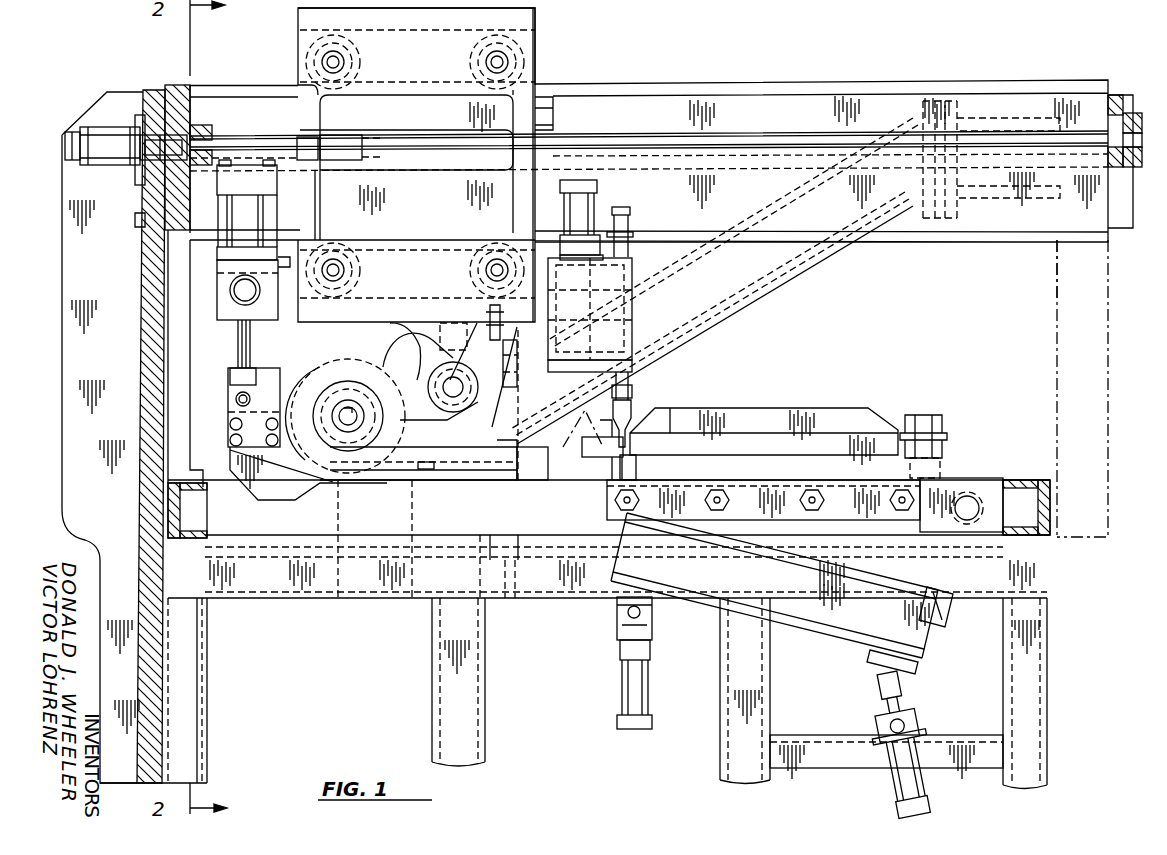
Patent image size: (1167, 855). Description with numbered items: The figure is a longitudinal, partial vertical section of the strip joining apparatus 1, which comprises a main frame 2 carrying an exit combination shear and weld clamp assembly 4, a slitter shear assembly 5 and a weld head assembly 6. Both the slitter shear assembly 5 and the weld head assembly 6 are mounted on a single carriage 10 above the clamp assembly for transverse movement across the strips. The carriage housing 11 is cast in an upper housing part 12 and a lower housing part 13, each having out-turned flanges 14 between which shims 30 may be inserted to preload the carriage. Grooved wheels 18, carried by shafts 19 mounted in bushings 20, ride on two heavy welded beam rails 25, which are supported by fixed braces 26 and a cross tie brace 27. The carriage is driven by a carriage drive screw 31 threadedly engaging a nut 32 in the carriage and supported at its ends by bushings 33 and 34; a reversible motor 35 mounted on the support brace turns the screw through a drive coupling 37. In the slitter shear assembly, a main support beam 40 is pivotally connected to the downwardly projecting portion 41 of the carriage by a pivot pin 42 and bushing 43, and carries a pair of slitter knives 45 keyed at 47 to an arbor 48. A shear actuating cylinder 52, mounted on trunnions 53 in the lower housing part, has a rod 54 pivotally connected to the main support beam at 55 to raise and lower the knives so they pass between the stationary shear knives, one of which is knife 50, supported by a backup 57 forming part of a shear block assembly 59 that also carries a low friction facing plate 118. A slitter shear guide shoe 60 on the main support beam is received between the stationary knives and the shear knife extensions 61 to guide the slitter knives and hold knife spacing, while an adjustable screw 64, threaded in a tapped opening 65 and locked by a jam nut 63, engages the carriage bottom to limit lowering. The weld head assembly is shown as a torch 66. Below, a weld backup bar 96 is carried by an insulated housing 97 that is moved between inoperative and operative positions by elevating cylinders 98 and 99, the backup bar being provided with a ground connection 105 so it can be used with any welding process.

The strip joining apparatus 1 is at (1116, 364).
The main frame 2 is at (1045, 630).
The combination shear and weld clamp assembly 4 is at (800, 400).
The slitter shear assembly 5 is at (386, 489).
The weld head assembly 6 is at (645, 388).
The carriage 10 is at (421, 162).
The carriage housing 11 is at (305, 80).
The upper housing part 12 is at (298, 15).
The lower housing part 13 is at (318, 205).
The out-turned flanges 14 is at (553, 100).
The grooved wheels 18 is at (350, 45).
The shafts 19 is at (505, 60).
The bushings 20 is at (480, 52).
The beam rails 25 is at (690, 84).
The fixed braces 26 is at (72, 421).
The cross tie brace 27 is at (728, 320).
The shims 30 is at (502, 112).
The carriage drive screw 31 is at (708, 134).
The nut 32 is at (340, 136).
The bushing 33 is at (1140, 95).
The bushing 34 is at (212, 138).
The reversible motor 35 is at (100, 128).
The drive coupling 37 is at (165, 155).
The main support beam 40 is at (258, 395).
The downwardly projecting portion 41 is at (410, 347).
The pivot pin 42 is at (475, 397).
The bushing 43 is at (450, 425).
The slitter knives 45 is at (320, 378).
The key 47 is at (348, 400).
The arbor 48 is at (358, 414).
The stationary shear knife 50 is at (940, 470).
The shear actuating cylinder 52 is at (225, 255).
The trunnions 53 is at (242, 296).
The rod 54 is at (238, 353).
The pivot connection 55 is at (236, 402).
The backup 57 is at (910, 537).
The shear block assembly 59 is at (600, 532).
The slitter shear guide shoe 60 is at (300, 500).
The shear knife extensions 61 is at (553, 480).
The jam nut 63 is at (490, 315).
The adjustable screw 64 is at (590, 276).
The tapped opening 65 is at (515, 385).
The torch 66 is at (625, 440).
The weld backup bar 96 is at (735, 566).
The insulated housing 97 is at (790, 640).
The elevating cylinder 98 is at (920, 780).
The elevating cylinder 99 is at (620, 686).
The ground connection 105 is at (950, 615).
The low friction facing plate 118 is at (805, 480).